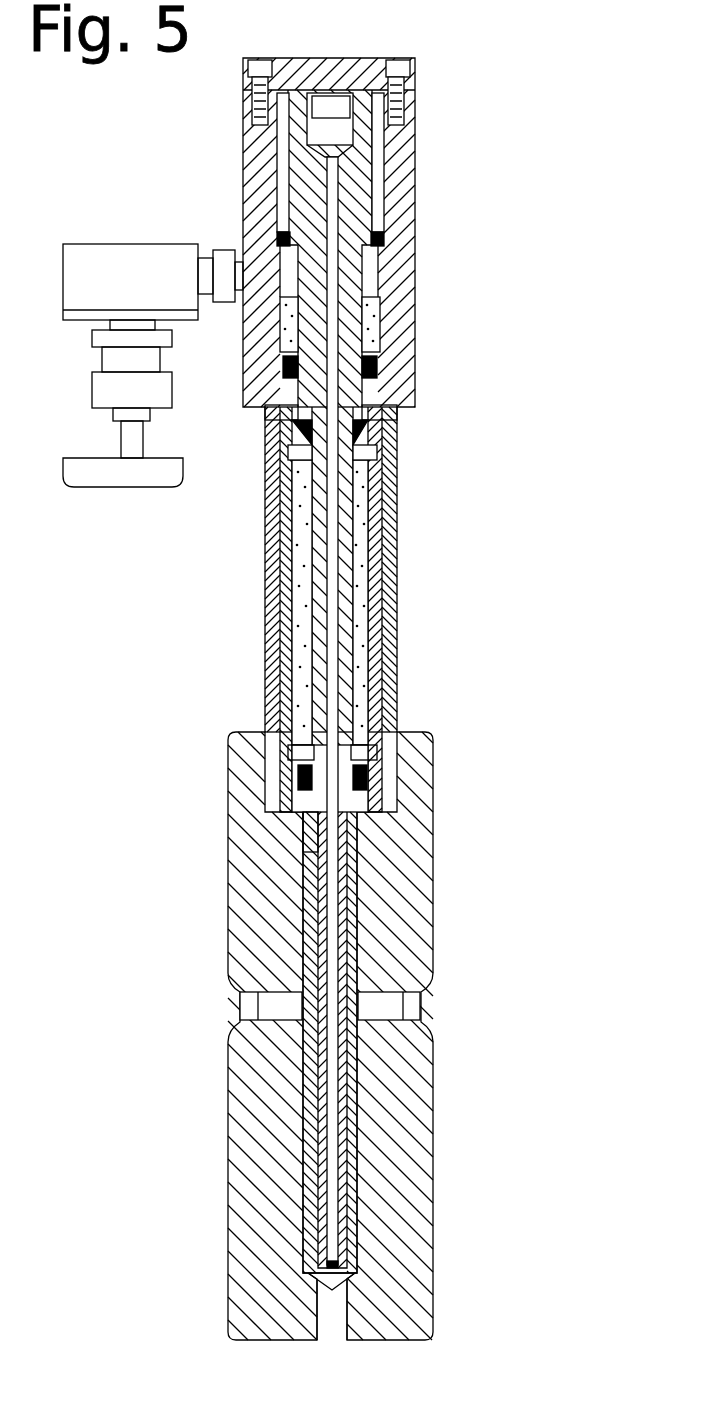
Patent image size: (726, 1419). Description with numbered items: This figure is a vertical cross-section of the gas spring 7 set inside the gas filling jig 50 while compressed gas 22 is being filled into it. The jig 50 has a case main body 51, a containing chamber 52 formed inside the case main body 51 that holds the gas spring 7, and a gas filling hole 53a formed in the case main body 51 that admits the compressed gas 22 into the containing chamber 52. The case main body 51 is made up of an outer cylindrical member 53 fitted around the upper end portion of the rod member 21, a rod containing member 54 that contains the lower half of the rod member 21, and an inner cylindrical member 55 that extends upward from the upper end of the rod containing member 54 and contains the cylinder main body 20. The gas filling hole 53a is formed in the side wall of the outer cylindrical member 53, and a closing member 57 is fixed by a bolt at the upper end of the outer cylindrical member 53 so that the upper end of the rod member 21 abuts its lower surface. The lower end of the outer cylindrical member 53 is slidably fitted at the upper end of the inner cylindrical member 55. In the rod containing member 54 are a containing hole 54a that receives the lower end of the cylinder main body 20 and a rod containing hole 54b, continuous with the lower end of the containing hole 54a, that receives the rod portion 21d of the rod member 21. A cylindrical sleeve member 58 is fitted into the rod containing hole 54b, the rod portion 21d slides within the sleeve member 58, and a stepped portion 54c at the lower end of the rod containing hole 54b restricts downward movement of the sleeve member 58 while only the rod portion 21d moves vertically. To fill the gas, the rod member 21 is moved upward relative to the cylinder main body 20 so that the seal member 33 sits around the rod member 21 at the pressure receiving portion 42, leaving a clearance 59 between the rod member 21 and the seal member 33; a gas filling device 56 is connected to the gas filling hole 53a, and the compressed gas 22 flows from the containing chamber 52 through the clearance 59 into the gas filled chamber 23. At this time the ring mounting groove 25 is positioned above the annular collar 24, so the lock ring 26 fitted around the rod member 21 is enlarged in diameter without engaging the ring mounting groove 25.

The gas filling jig 50 is at (513, 87).
The closing member 57 is at (362, 59).
The gas spring 7 is at (387, 194).
The rod member 21 is at (290, 196).
The gas filling device 56 is at (102, 246).
The gas filling hole 53a is at (226, 244).
The containing chamber 52 is at (372, 330).
The outer cylindrical member 53 is at (417, 395).
The clearance 59 is at (272, 420).
The pressure receiving portion 42 is at (375, 452).
The seal member 33 is at (270, 462).
The inner cylindrical member 55 is at (388, 530).
The gas filled chamber 23 is at (300, 527).
The compressed gas 22 is at (285, 608).
The cylinder main body 20 is at (275, 662).
The case main body 51 is at (500, 402).
The rod containing member 54 is at (413, 740).
The containing hole 54a is at (395, 770).
The ring mounting groove 25 is at (372, 806).
The annular collar 24 is at (362, 832).
The lock ring 26 is at (303, 834).
The rod containing hole 54b is at (357, 930).
The sleeve member 58 is at (357, 1080).
The rod portion 21d is at (322, 1244).
The stepped portion 54c is at (358, 1258).